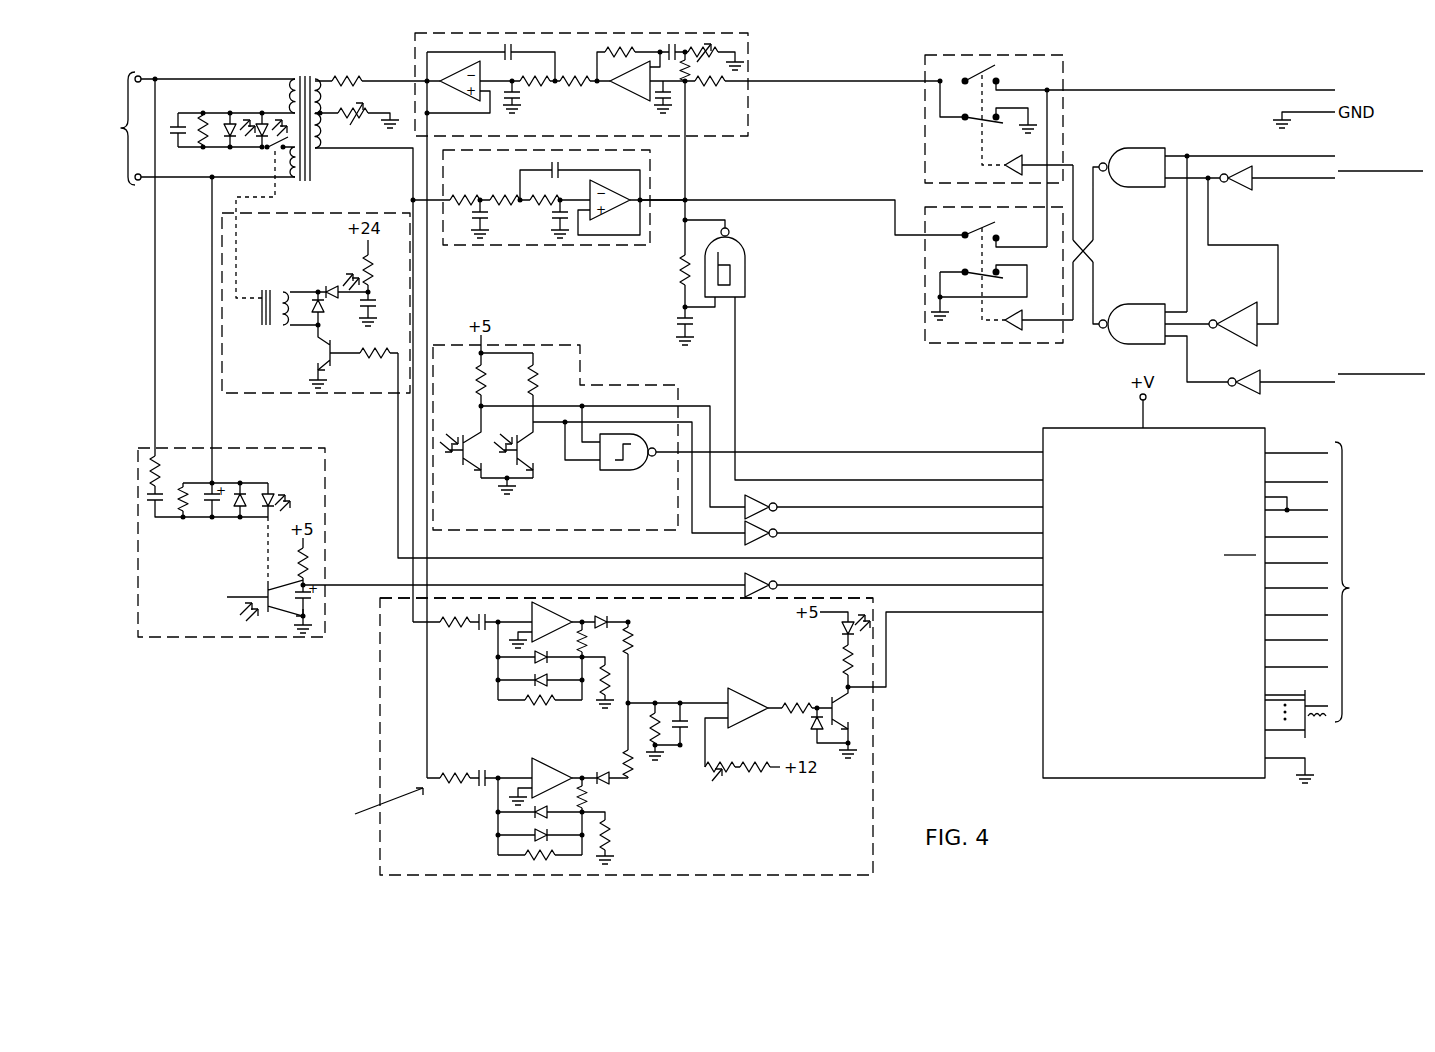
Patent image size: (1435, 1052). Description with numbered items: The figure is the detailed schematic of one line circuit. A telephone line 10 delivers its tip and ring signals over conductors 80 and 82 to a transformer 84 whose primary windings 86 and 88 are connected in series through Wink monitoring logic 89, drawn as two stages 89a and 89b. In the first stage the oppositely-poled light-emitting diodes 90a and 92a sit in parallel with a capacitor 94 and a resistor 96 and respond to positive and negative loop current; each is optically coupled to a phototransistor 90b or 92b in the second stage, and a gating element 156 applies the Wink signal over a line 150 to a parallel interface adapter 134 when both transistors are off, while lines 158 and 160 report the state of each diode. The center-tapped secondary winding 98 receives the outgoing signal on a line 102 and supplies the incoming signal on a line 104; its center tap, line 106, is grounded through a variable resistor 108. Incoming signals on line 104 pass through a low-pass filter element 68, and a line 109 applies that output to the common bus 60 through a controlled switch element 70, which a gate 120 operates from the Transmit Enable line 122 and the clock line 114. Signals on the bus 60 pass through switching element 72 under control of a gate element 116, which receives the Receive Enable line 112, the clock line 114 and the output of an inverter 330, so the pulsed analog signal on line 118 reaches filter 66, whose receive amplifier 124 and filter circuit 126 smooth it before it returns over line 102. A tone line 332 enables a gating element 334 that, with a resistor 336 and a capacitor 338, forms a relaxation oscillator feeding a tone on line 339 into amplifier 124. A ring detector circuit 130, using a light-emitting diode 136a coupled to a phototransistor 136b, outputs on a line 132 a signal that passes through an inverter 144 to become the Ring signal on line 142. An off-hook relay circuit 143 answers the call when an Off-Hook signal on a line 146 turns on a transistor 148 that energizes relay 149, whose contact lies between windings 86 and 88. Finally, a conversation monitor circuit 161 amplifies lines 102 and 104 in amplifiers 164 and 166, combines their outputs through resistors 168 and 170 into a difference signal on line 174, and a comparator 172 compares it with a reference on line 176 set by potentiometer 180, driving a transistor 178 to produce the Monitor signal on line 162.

The telephone line 10 is at (140, 128).
The tip conductor 80 is at (139, 79).
The ring conductor 82 is at (141, 181).
The transformer 84 is at (298, 82).
The primary winding 86 is at (290, 95).
The primary winding 88 is at (292, 168).
The Wink monitoring logic 89 is at (453, 336).
The first stage of Wink monitoring logic 89a is at (248, 87).
The second stage of Wink monitoring logic 89b is at (556, 345).
The light-emitting diode portion 90a is at (228, 118).
The phototransistor portion 90b is at (460, 448).
The light-emitting diode portion 92a is at (264, 117).
The phototransistor portion 92b is at (518, 457).
The capacitor 94 is at (178, 148).
The resistor 96 is at (207, 150).
The center-tapped winding 98 is at (329, 95).
The receive line 102 is at (325, 79).
The incoming signal line 104 is at (330, 150).
The center tap line 106 is at (322, 116).
The variable resistor 108 is at (368, 102).
The filter output line 109 is at (758, 201).
The receive enable line 112 is at (1283, 386).
The clock line 114 is at (1296, 157).
The gate element 116 is at (1123, 306).
The receive line 118 is at (757, 84).
The gate 120 is at (1136, 148).
The transmit enable line 122 is at (1303, 181).
The receive amplifier 124 is at (643, 99).
The filter circuit 126 is at (526, 100).
The ring detector circuit 130 is at (239, 451).
The ring detector output line 132 is at (663, 585).
The parallel interface adapter 134 is at (1180, 778).
The light-emitting diode 136a is at (272, 488).
The phototransistor 136b is at (266, 590).
The ring signal line 142 is at (838, 588).
The off-hook relay circuit 143 is at (337, 394).
The inverter 144 is at (766, 585).
The off-hook signal line 146 is at (838, 561).
The transistor 148 is at (337, 367).
The off-hook relay 149 is at (268, 331).
The wink signal line 150 is at (838, 455).
The gating element 156 is at (620, 471).
The LED state line 158 is at (838, 510).
The LED state line 160 is at (838, 536).
The conversation monitor circuit 161 is at (370, 726).
The monitor signal line 162 is at (888, 668).
The amplifier 164 is at (482, 810).
The amplifier 166 is at (487, 648).
The resistor 168 is at (621, 757).
The resistor 170 is at (630, 632).
The operational amplifier 172 is at (747, 703).
The difference signal line 174 is at (638, 703).
The reference signal line 176 is at (706, 762).
The grounded emitter transistor 178 is at (847, 713).
The variable potentiometer 180 is at (706, 774).
The inverter 330 is at (1247, 302).
The tone line 332 is at (838, 483).
The gating element 334 is at (788, 263).
The resistor 336 is at (679, 280).
The capacitor 338 is at (678, 327).
The tone output line 339 is at (689, 192).
The common bus 60 is at (1245, 92).
The receive filter 66 is at (692, 39).
The filter element 68 is at (652, 182).
The controlled switch element 70 is at (918, 335).
The control switching element 72 is at (923, 156).